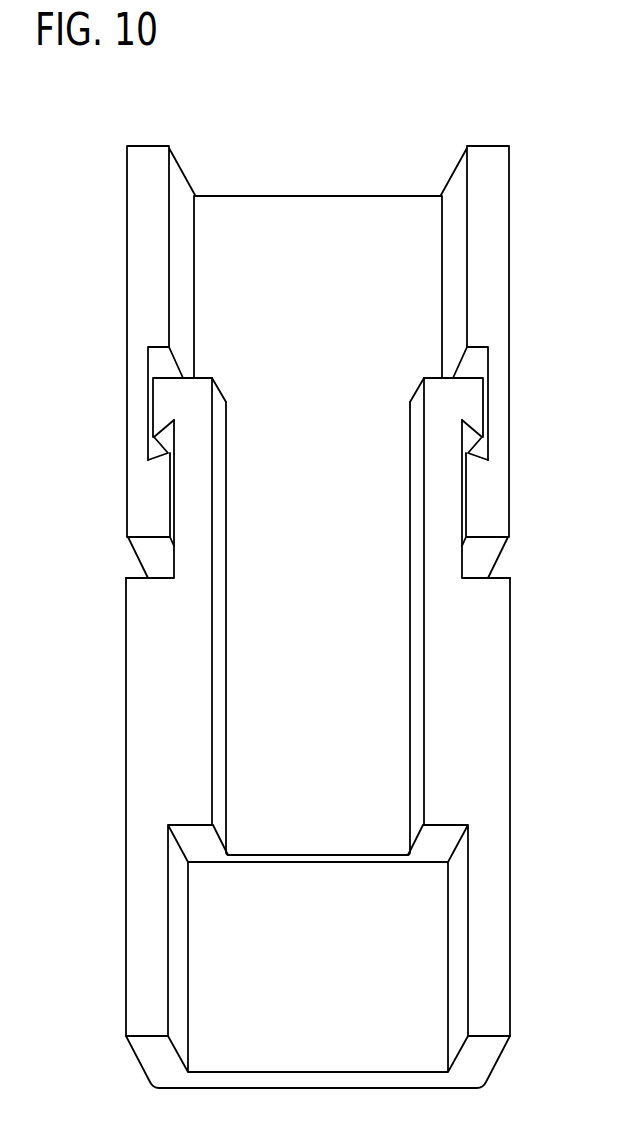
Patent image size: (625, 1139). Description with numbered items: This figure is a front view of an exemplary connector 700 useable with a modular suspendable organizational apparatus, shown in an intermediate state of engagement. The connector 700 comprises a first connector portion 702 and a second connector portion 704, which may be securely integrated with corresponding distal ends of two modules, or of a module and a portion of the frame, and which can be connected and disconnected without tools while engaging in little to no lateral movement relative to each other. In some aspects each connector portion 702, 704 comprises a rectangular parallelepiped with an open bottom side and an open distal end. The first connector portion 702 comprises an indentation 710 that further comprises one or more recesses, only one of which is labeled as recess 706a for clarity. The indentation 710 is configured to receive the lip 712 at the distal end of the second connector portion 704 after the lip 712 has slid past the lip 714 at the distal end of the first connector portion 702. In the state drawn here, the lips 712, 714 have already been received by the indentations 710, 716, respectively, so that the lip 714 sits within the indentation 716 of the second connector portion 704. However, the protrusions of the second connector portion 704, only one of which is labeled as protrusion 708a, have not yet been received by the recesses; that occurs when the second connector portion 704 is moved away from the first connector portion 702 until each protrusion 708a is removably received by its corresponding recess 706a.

The connector 700 is at (459, 86).
The first connector portion 702 is at (110, 713).
The second connector portion 704 is at (116, 236).
The recess 706a is at (161, 427).
The protrusion 708a is at (156, 455).
The indentation 710 is at (462, 568).
The lip 712 is at (487, 494).
The lip 714 is at (172, 400).
The indentation 716 is at (162, 360).